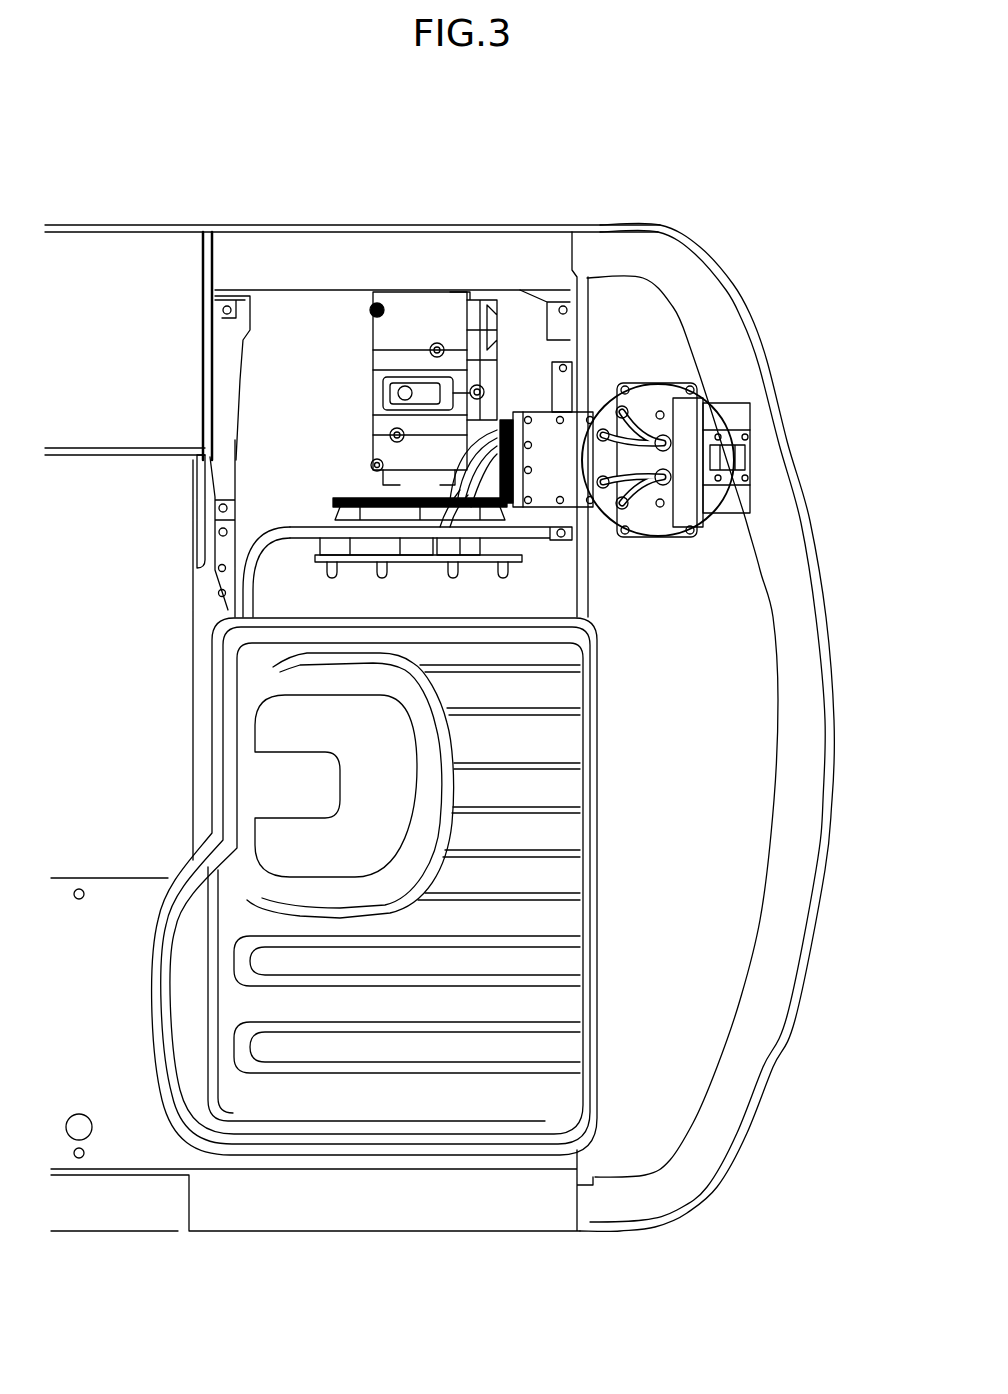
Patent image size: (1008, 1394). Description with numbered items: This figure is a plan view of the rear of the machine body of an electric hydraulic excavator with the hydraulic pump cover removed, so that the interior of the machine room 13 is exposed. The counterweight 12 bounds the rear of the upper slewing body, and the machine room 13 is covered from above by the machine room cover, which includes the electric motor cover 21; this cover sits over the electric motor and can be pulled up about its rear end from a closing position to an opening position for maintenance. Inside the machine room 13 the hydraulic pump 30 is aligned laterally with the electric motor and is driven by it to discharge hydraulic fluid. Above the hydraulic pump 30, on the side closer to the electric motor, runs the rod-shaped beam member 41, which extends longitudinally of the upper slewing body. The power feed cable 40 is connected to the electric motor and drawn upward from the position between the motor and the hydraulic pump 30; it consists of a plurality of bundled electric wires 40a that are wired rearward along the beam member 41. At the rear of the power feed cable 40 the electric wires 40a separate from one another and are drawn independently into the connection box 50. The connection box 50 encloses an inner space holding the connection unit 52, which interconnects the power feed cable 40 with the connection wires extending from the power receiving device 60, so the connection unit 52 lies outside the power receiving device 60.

The counterweight 12 is at (622, 225).
The machine room 13 is at (428, 225).
The electric motor cover 21 is at (340, 1110).
The hydraulic pump 30 is at (374, 445).
The power feed cable 40 is at (288, 530).
The electric wires 40a is at (440, 470).
The beam member 41 is at (550, 545).
The connection box 50 is at (565, 410).
The connection unit 52 is at (498, 430).
The power receiving device 60 is at (643, 396).